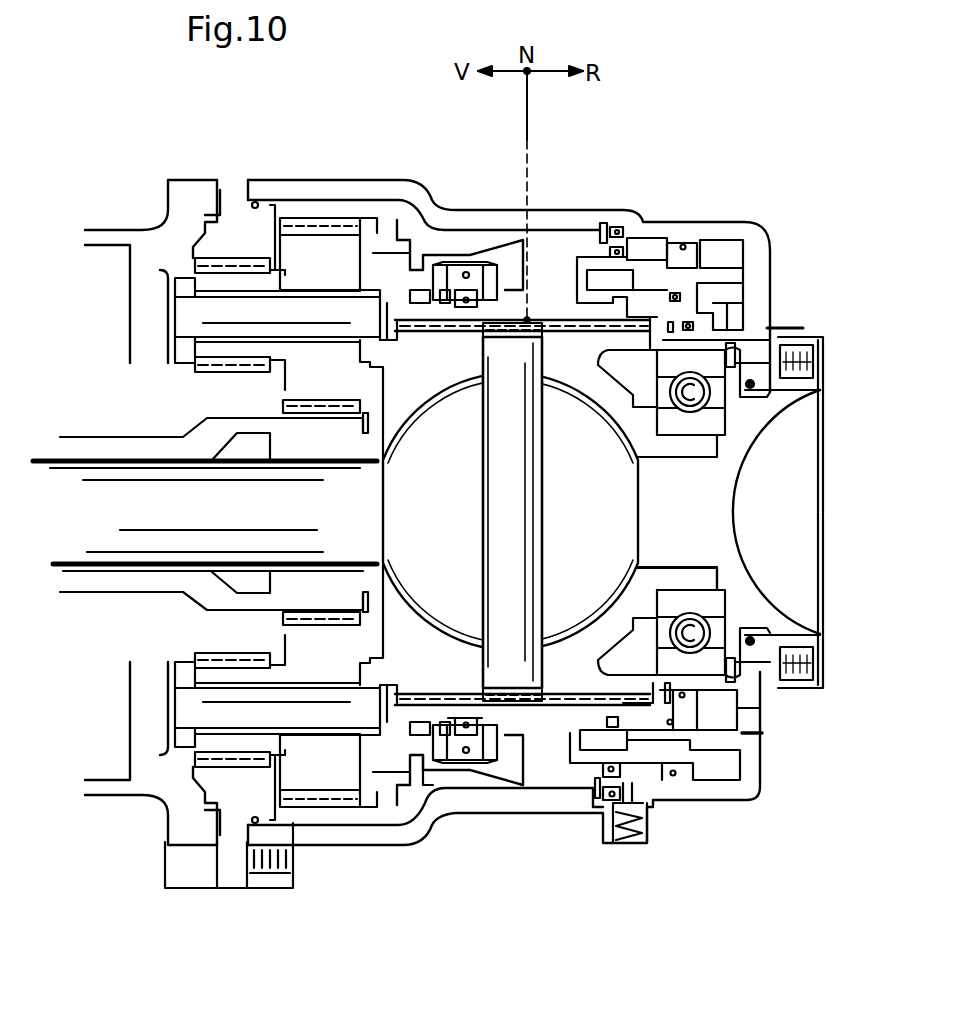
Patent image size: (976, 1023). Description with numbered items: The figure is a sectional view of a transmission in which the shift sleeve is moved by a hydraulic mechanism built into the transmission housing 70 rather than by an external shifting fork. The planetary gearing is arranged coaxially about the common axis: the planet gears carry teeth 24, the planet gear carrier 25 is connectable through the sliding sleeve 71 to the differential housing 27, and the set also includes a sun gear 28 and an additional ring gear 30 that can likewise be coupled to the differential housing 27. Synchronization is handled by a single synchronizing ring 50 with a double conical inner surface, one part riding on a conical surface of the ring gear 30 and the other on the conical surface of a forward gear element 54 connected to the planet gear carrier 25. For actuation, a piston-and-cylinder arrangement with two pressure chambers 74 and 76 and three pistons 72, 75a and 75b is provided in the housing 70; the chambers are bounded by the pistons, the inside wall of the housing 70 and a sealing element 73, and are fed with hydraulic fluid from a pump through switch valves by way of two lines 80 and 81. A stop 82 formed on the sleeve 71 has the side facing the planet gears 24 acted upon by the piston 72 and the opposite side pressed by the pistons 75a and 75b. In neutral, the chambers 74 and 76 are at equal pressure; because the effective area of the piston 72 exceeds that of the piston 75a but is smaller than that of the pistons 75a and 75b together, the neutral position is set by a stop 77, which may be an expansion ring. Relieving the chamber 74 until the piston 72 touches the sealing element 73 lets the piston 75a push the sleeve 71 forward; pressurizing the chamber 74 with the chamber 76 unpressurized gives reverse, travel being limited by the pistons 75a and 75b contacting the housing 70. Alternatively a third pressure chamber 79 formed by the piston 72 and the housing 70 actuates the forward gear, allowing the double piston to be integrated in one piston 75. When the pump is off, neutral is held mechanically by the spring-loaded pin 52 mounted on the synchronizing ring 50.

The planet gear teeth 24 is at (308, 250).
The planet gear carrier 25 is at (205, 322).
The differential housing 27 is at (697, 573).
The sun gear 28 is at (163, 452).
The additional ring gear 30 is at (478, 770).
The synchronizing ring 50 is at (482, 745).
The pin 52 is at (470, 266).
The forward gear element 54 is at (427, 757).
The transmission housing 70 is at (505, 220).
The sliding sleeve 71 is at (535, 320).
The piston 72 is at (677, 258).
The sealing element 73 is at (613, 226).
The pressure chamber 74 is at (640, 248).
The piston 75 is at (764, 285).
The piston 75a is at (690, 310).
The piston 75b is at (718, 330).
The pressure chamber 76 is at (740, 306).
The stop 77 is at (770, 330).
The third pressure chamber 79 is at (722, 250).
The line 80 is at (738, 718).
The line 81 is at (632, 845).
The stop 82 is at (603, 715).